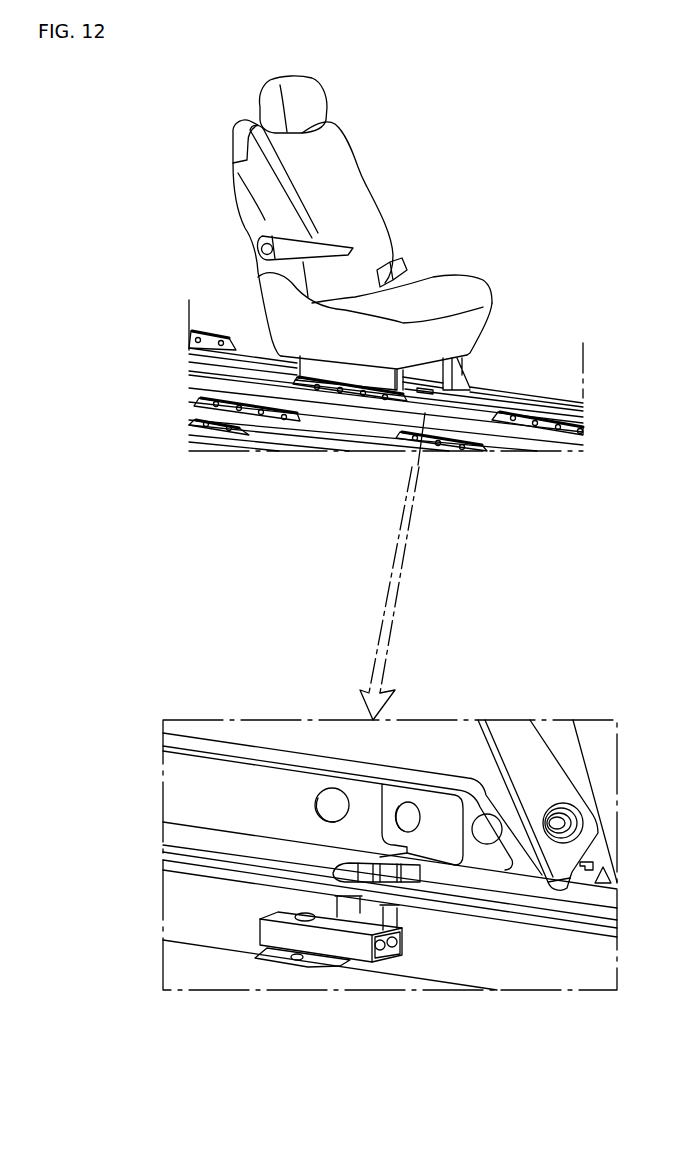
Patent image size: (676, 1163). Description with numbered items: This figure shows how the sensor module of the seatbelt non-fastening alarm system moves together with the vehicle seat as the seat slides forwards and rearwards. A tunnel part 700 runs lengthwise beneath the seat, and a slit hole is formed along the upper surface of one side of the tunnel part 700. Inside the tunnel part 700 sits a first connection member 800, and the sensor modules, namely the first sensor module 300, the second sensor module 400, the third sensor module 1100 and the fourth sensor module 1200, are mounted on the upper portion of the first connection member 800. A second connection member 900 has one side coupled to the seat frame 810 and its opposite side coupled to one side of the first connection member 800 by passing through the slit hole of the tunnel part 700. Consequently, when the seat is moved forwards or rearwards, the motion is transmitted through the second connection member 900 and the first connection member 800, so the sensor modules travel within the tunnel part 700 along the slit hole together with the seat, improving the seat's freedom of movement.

The tunnel part 700 is at (193, 908).
The seat frame 810 is at (287, 800).
The second connection member 900 is at (427, 805).
The first connection member 800 is at (280, 952).
The first sensor module 300 is at (398, 1007).
The second sensor module 400 is at (398, 1007).
The third sensor module 1100 is at (398, 1007).
The fourth sensor module 1200 is at (342, 945).